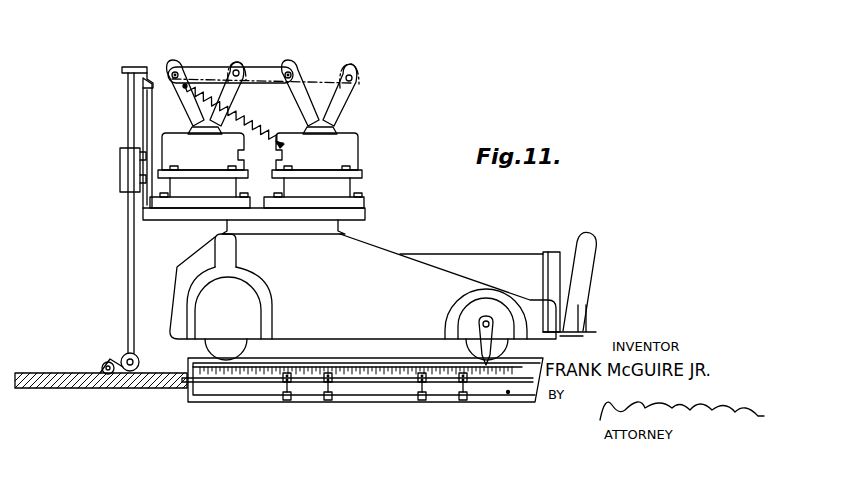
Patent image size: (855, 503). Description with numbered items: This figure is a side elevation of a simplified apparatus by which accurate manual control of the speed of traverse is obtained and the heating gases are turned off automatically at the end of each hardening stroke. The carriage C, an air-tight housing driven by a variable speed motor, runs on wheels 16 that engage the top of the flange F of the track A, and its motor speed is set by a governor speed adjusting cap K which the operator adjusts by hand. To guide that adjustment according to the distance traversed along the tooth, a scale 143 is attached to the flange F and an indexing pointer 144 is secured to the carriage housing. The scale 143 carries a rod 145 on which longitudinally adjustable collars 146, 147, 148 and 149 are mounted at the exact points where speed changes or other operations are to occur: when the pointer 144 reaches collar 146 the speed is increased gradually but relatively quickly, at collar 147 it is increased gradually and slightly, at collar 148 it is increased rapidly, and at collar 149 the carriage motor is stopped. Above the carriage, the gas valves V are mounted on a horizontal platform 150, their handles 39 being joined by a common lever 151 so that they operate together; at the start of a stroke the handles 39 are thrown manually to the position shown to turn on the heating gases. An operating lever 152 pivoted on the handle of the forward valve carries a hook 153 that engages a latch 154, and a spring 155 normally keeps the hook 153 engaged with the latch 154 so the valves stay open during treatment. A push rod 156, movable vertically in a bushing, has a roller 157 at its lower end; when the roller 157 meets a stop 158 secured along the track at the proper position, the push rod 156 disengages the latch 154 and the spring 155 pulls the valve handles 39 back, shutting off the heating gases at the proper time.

The operating lever 152 is at (143, 70).
The hook 153 is at (142, 80).
The latch 154 is at (147, 104).
The push rod 156 is at (128, 268).
The horizontal platform 150 is at (197, 215).
The common lever 151 is at (307, 93).
The valve handles 39 is at (236, 64).
The spring 155 is at (268, 121).
The valves V is at (247, 158).
The carriage C is at (389, 247).
The speed adjusting cap K is at (589, 312).
The wheels 16 is at (222, 345).
The indexing pointer 144 is at (480, 358).
The track A is at (203, 406).
The flange F is at (305, 358).
The scale 143 is at (337, 366).
The rod 145 is at (252, 384).
The collar 149 is at (285, 392).
The collar 148 is at (323, 392).
The collar 147 is at (418, 393).
The collar 146 is at (460, 393).
The roller 157 is at (141, 361).
The stop 158 is at (103, 366).